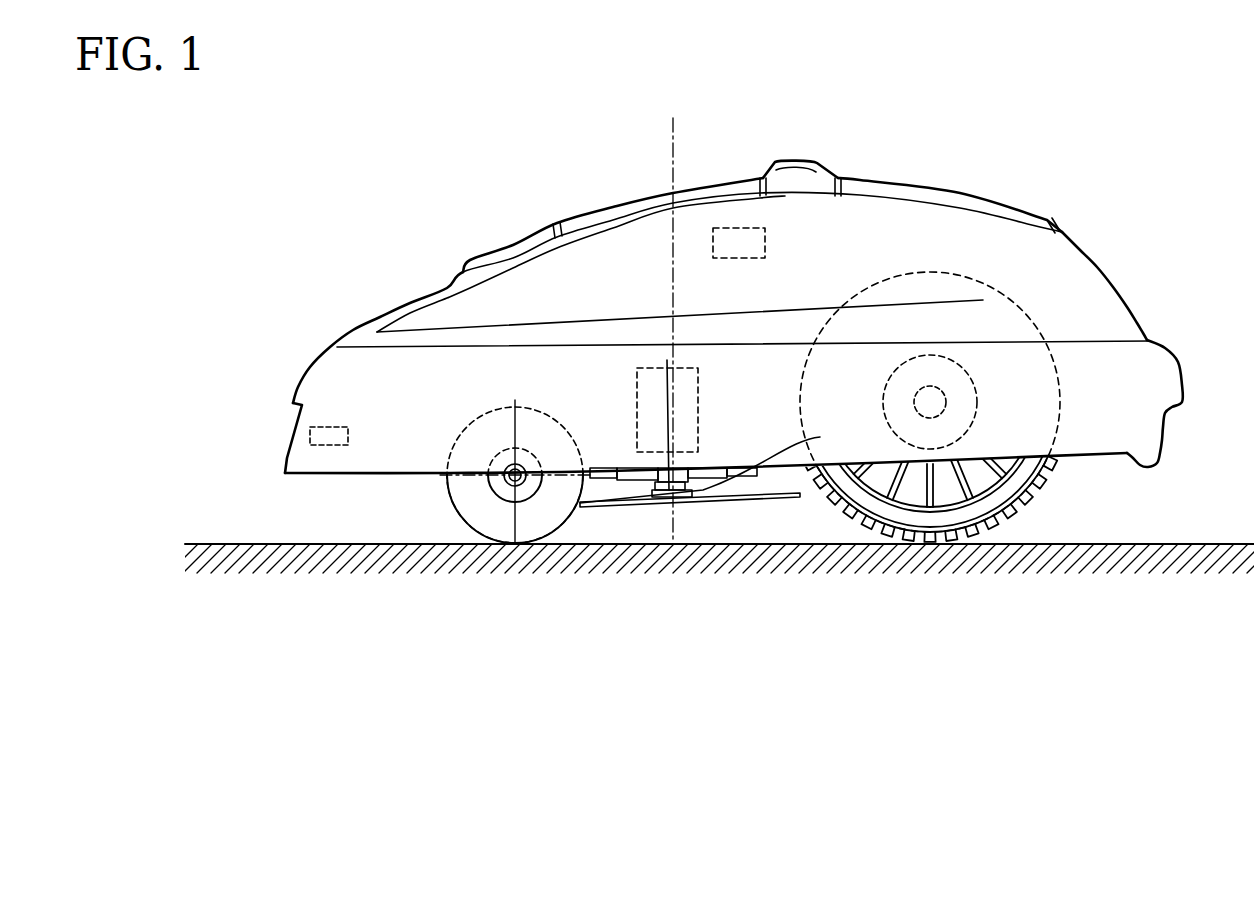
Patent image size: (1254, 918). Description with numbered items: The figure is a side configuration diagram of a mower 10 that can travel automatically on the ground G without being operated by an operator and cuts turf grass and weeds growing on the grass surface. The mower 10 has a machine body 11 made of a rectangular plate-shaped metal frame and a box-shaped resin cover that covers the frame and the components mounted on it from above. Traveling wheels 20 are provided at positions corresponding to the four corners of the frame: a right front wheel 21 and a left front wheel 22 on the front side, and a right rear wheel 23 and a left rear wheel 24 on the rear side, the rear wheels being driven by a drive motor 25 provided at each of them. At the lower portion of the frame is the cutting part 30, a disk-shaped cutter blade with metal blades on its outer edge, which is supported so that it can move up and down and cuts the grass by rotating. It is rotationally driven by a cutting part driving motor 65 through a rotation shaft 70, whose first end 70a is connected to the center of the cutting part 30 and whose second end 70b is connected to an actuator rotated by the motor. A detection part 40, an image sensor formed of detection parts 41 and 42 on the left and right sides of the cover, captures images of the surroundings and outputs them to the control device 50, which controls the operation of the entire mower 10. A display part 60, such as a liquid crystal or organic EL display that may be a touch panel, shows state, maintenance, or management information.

The mower 10 is at (747, 318).
The machine body 11 is at (1162, 347).
The traveling wheel 20 is at (756, 453).
The right front wheel 21 is at (515, 471).
The left front wheel 22 is at (515, 471).
The right rear wheel 23 is at (930, 407).
The left rear wheel 24 is at (930, 407).
The drive motor 25 is at (977, 400).
The cutting part 30 is at (727, 527).
The detection part 40 is at (243, 436).
The detection part 41 is at (329, 436).
The detection part 42 is at (310, 437).
The control device 50 is at (767, 240).
The display part 60 is at (517, 267).
The cutting part driving motor 65 is at (700, 393).
The rotation shaft 70 is at (660, 459).
The first end 70a is at (727, 461).
The second end 70b is at (685, 459).
The ground G is at (1231, 543).